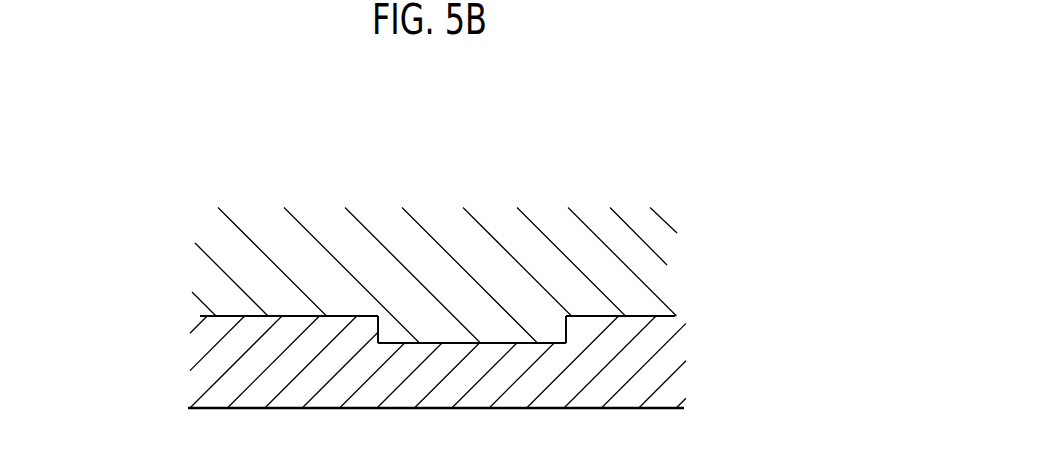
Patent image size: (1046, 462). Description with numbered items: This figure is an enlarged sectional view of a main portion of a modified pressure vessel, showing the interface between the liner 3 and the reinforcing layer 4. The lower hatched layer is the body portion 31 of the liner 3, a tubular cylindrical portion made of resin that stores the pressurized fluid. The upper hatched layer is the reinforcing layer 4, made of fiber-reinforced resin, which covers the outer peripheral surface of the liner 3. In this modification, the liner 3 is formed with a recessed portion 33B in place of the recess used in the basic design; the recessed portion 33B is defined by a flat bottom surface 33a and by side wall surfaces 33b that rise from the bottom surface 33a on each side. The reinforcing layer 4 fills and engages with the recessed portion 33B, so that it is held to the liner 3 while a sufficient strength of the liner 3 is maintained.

The liner 3 is at (232, 385).
The body portion 31 is at (642, 370).
The reinforcing layer 4 is at (642, 263).
The recessed portion 33B is at (473, 337).
The bottom surface 33a is at (428, 343).
The side wall surfaces 33b is at (379, 336).